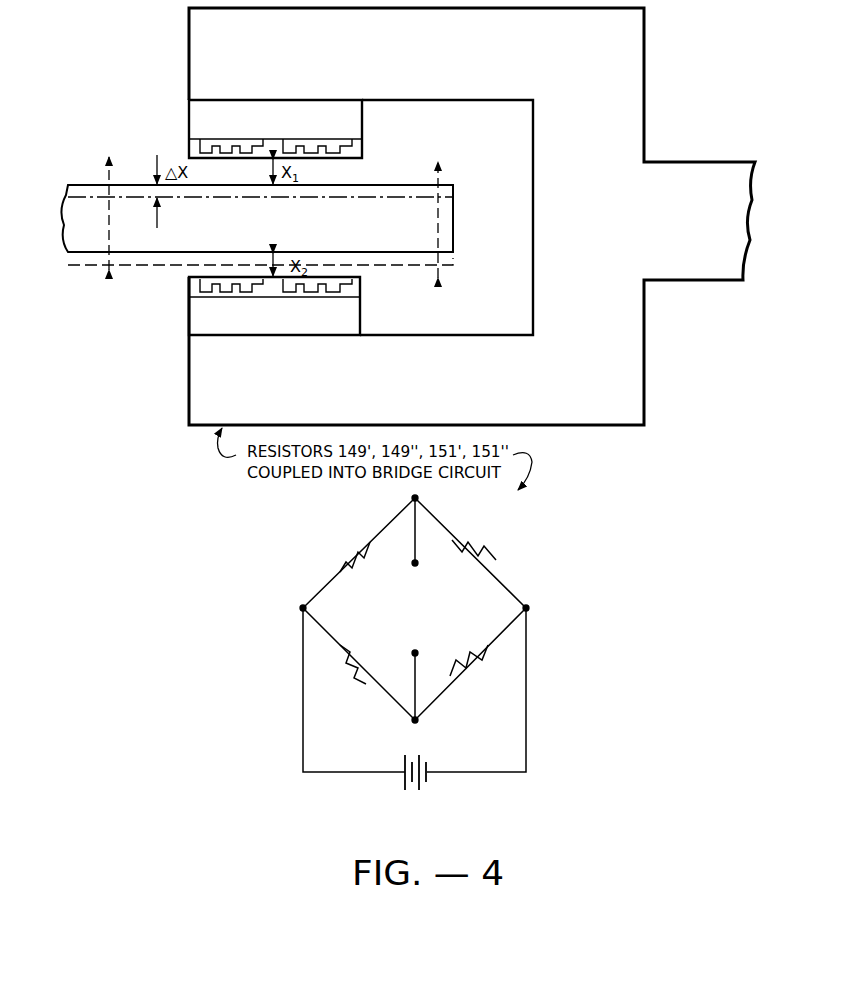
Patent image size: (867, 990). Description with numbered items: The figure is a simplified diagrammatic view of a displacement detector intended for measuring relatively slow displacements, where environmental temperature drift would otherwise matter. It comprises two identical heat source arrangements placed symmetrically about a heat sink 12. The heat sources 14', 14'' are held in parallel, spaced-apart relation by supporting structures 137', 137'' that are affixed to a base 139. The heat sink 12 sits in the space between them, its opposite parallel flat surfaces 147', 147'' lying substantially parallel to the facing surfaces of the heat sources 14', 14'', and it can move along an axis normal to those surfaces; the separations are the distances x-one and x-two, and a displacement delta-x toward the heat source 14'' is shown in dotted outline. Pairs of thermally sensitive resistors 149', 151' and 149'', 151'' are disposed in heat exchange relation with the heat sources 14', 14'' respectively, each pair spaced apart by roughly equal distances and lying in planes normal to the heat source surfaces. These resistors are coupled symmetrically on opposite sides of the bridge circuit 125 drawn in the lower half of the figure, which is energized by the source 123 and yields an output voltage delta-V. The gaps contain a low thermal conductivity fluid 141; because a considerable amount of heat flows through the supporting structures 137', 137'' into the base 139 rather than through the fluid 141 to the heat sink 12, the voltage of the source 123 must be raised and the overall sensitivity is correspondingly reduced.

The heat sink 12 is at (284, 229).
The heat source 14' is at (248, 166).
The heat source 14'' is at (344, 284).
The source 123 is at (420, 766).
The bridge circuit 125 is at (378, 612).
The supporting structure 137' is at (275, 129).
The supporting structure 137'' is at (274, 306).
The base 139 is at (653, 232).
The fluid 141 is at (180, 268).
The flat surface 147' is at (371, 174).
The flat surface 147'' is at (416, 272).
The thermally sensitive resistor 149' is at (400, 404).
The thermally sensitive resistor 149'' is at (348, 490).
The thermally sensitive resistor 151' is at (260, 340).
The thermally sensitive resistor 151'' is at (348, 419).